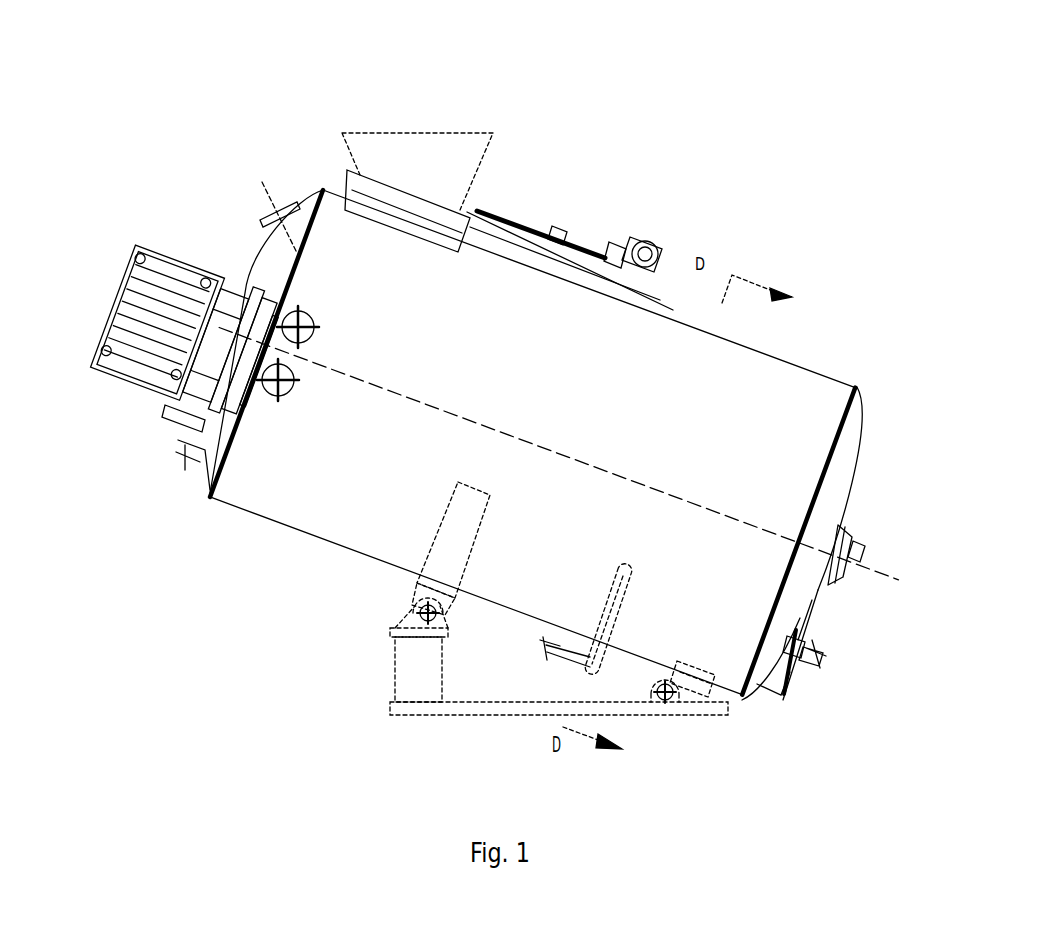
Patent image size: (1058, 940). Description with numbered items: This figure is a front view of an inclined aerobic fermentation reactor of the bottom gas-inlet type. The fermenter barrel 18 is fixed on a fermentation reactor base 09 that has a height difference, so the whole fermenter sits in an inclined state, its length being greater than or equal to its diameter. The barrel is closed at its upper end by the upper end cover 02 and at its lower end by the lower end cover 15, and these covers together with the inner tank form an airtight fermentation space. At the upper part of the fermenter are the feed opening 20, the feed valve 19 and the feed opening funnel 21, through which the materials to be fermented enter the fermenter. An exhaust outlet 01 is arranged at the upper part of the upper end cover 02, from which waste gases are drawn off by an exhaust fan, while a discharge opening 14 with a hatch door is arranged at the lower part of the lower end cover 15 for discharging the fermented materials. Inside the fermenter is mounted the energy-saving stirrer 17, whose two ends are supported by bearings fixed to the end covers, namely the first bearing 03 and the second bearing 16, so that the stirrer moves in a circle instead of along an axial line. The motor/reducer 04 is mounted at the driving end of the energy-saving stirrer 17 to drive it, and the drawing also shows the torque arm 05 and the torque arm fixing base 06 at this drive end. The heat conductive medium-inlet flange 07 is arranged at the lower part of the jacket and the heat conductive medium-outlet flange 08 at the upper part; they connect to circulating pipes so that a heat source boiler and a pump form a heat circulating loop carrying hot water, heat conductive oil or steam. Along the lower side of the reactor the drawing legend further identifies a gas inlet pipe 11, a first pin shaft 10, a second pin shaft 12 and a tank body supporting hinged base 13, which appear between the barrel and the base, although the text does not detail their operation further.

The exhaust outlet 01 is at (260, 220).
The upper end cover 02 is at (263, 295).
The first bearing 03 is at (233, 305).
The motor/reducer 04 is at (147, 317).
The torque arm 05 is at (178, 405).
The torque arm fixing base 06 is at (190, 433).
The inlet flange 07 is at (275, 393).
The outlet flange 08 is at (312, 333).
The fermentation reactor base 09 is at (447, 708).
The first pin shaft 10 is at (430, 625).
The gas inlet pipe 11 is at (612, 605).
The second pin shaft 12 is at (667, 703).
The tank body supporting hinged base 13 is at (695, 678).
The discharge opening 14 is at (792, 682).
The lower end cover 15 is at (807, 590).
The second bearing 16 is at (847, 558).
The energy-saving stirrer 17 is at (862, 550).
The fermenter barrel 18 is at (773, 387).
The feed valve 19 is at (547, 253).
The feed opening 20 is at (392, 210).
The feed opening funnel 21 is at (370, 148).